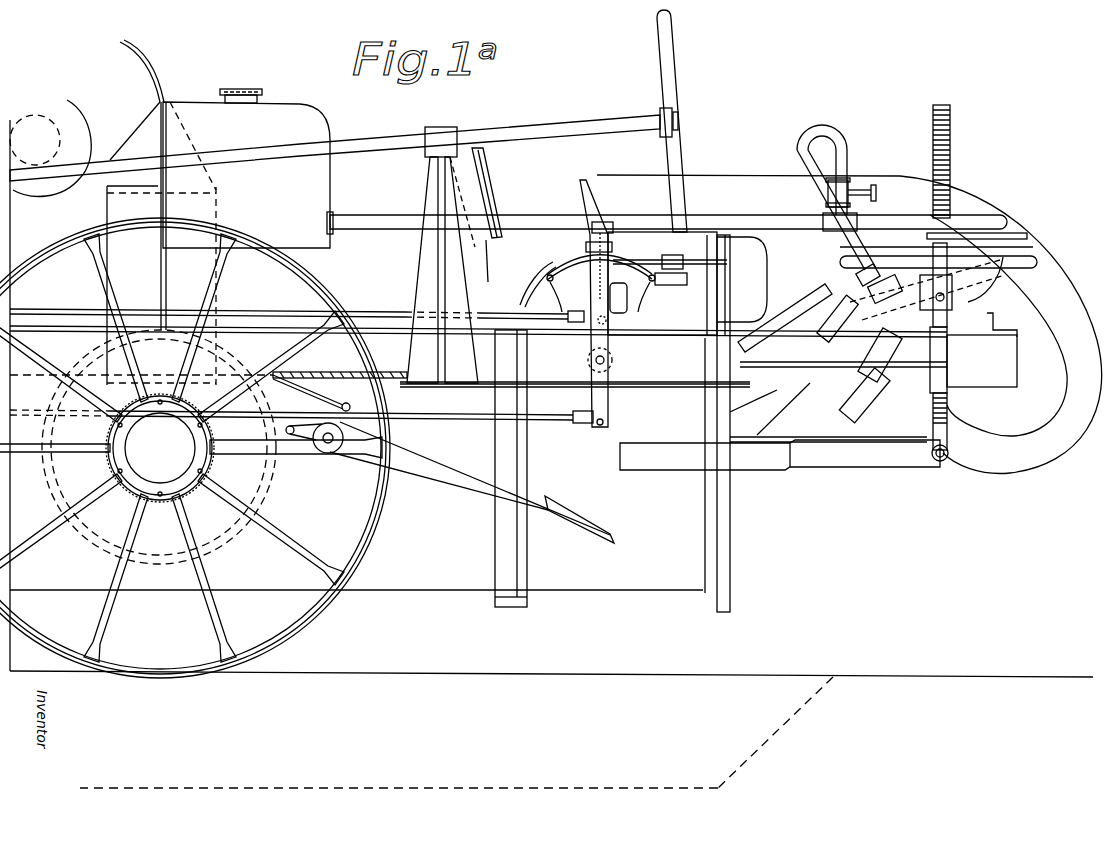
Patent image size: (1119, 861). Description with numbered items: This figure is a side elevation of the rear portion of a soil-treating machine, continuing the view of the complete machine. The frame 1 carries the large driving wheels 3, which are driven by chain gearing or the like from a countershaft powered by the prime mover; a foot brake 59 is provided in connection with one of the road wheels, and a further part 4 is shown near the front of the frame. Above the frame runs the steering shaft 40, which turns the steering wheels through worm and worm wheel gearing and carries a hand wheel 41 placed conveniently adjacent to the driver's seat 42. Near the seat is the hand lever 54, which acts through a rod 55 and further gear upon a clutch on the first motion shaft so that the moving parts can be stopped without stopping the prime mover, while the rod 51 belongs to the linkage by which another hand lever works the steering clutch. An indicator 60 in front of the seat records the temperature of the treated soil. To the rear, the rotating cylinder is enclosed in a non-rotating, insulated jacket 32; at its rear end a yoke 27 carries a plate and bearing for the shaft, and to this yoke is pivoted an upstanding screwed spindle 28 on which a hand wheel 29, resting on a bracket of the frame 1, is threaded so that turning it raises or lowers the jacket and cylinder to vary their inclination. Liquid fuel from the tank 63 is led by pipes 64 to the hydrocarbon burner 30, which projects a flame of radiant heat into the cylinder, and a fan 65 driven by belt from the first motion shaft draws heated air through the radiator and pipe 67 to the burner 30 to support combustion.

The frame 1 is at (654, 360).
The driving wheels 3 is at (372, 535).
The front wheel / axle part 4 is at (57, 128).
The yoke 27 is at (677, 457).
The screwed spindle 28 is at (950, 400).
The hand wheel 29 is at (1030, 257).
The burner 30 is at (773, 327).
The jacket 32 is at (618, 592).
The shaft 40 is at (547, 130).
The hand wheel 41 is at (667, 57).
The seat 42 is at (986, 280).
The rod 51 is at (388, 318).
The hand lever 54 is at (603, 258).
The rod 55 is at (425, 428).
The foot brake 59 is at (282, 457).
The indicator 60 is at (497, 193).
The tank 63 is at (293, 120).
The pipes 64 is at (375, 221).
The fan 65 is at (137, 53).
The pipe 67 is at (725, 175).